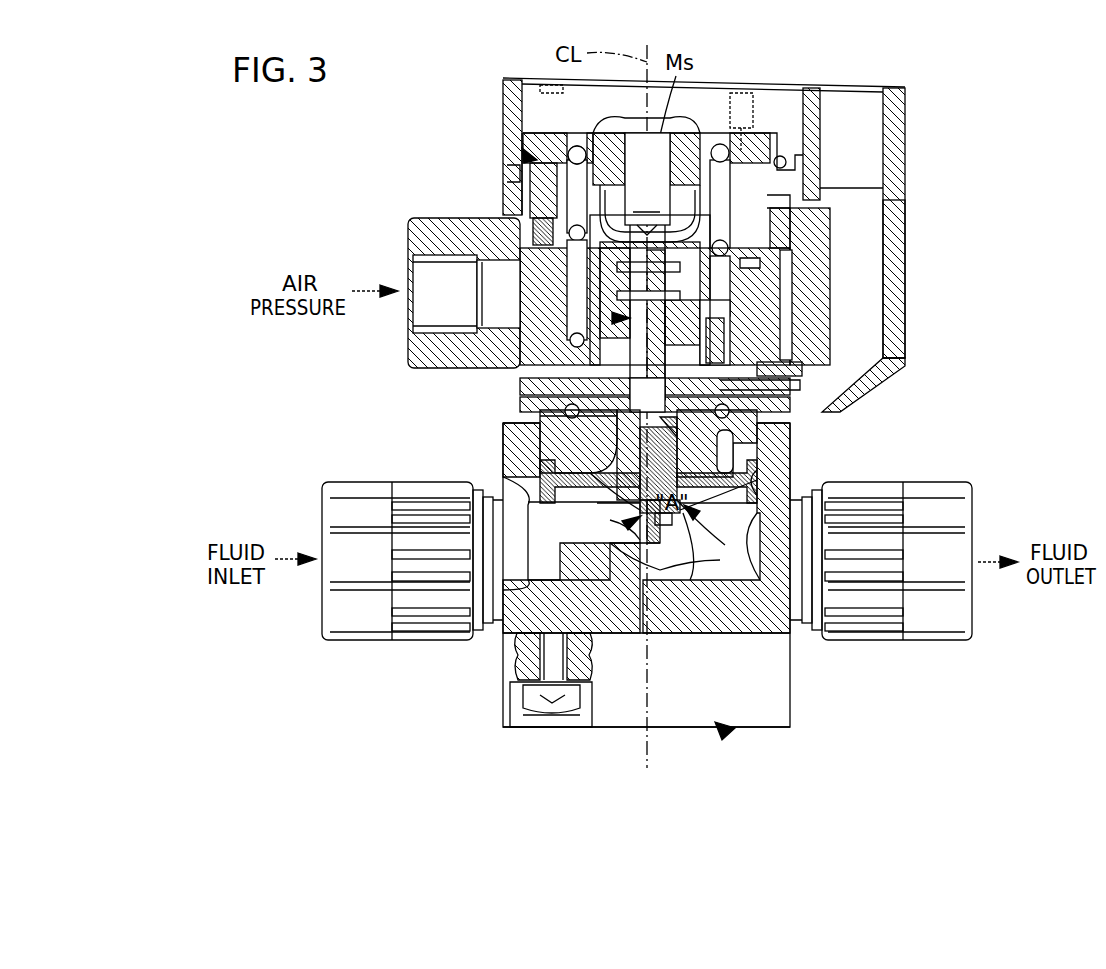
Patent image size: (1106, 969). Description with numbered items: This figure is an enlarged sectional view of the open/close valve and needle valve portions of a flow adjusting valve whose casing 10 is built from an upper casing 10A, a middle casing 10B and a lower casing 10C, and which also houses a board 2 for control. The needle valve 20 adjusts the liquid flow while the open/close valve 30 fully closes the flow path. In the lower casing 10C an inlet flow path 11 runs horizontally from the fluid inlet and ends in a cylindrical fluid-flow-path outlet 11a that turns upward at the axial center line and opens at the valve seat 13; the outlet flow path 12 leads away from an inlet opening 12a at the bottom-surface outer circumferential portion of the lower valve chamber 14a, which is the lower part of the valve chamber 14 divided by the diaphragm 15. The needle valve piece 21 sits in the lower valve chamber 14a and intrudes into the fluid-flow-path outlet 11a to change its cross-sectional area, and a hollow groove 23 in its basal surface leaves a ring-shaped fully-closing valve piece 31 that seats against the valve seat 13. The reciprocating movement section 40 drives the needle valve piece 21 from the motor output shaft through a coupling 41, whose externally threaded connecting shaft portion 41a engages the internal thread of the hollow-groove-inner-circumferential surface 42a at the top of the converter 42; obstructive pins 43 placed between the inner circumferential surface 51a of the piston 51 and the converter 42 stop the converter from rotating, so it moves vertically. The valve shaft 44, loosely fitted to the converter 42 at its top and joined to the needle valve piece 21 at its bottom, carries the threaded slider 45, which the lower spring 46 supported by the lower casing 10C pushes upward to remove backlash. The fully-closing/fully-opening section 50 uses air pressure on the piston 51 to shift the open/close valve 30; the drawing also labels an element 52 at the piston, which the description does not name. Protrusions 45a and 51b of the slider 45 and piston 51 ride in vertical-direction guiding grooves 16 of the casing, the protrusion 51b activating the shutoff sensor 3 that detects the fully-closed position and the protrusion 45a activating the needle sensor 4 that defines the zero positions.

The board 2 is at (822, 110).
The shutoff sensor 3 is at (787, 163).
The needle sensor 4 is at (790, 367).
The casing 10 is at (730, 733).
The upper casing 10A is at (905, 122).
The middle casing 10B is at (905, 248).
The lower casing 10C is at (792, 722).
The inlet flow path 11 is at (547, 563).
The fluid-flow-path outlet 11a is at (648, 547).
The outlet flow path 12 is at (760, 568).
The inlet opening 12a is at (720, 540).
The valve seat 13 is at (592, 513).
The valve chamber 14 is at (700, 477).
The lower valve chamber 14a is at (588, 502).
The diaphragm 15 is at (687, 497).
The vertical-direction guiding grooves 16 is at (784, 242).
The needle valve 20 is at (628, 528).
The needle valve piece 21 is at (667, 543).
The hollow groove 23 is at (663, 515).
The open/close valve 30 is at (677, 543).
The fully-closing valve piece 31 is at (687, 523).
The reciprocating movement section 40 is at (612, 318).
The coupling 41 is at (687, 234).
The connecting shaft portion 41a is at (633, 272).
The converter 42 is at (677, 303).
The hollow-groove-inner-circumferential surface 42a is at (667, 270).
The obstructive pins 43 is at (710, 342).
The valve shaft 44 is at (757, 421).
The slider 45 is at (760, 388).
The protrusion 45a is at (787, 382).
The lower spring 46 is at (728, 416).
The fully-closing/fully-opening section 50 is at (522, 150).
The piston 51 is at (500, 215).
The inner circumferential surface 51a is at (600, 227).
The protrusion 51b is at (792, 198).
The piston O-ring 52 is at (570, 150).